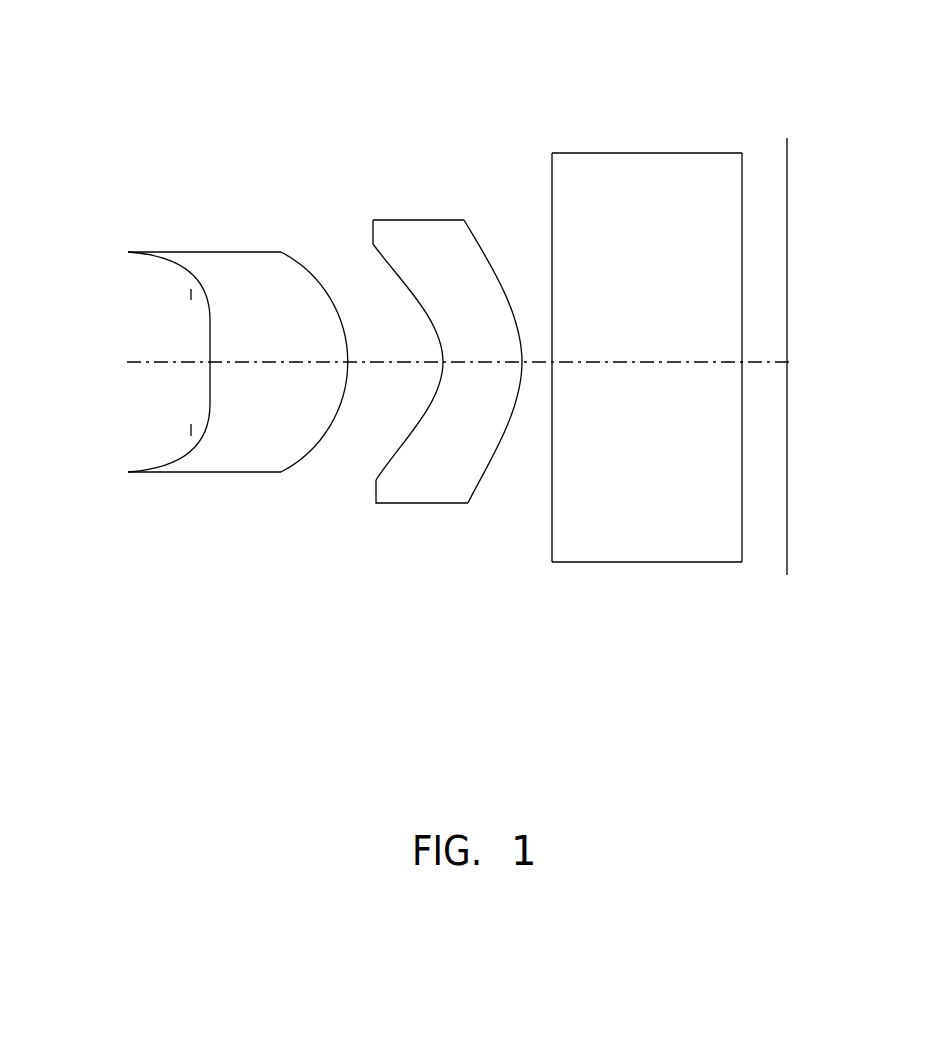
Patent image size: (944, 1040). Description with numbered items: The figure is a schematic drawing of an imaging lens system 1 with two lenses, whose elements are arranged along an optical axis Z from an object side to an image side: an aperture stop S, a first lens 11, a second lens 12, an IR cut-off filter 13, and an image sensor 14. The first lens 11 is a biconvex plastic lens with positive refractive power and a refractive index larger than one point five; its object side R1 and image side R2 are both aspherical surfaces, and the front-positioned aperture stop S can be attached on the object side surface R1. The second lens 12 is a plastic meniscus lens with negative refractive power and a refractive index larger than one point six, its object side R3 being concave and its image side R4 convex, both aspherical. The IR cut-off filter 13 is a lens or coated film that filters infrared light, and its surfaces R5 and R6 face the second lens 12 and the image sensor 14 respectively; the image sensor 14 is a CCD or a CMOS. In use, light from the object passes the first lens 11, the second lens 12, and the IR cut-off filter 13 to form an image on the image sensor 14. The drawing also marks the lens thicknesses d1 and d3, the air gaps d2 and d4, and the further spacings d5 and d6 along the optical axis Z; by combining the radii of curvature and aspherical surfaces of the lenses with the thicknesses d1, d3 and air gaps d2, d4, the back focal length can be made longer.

The imaging lens system 1 is at (200, 85).
The first lens 11 is at (238, 371).
The second lens 12 is at (427, 379).
The IR cut-off filter 13 is at (643, 368).
The image sensor 14 is at (787, 180).
The object side surface of the first lens R1 is at (210, 320).
The image side surface of the first lens R2 is at (297, 259).
The object side surface of the second lens R3 is at (384, 262).
The image side surface of the second lens R4 is at (477, 245).
The object-side surface of third lens R5 is at (552, 186).
The image-side surface of third lens R6 is at (742, 172).
The lens thickness of the first lens d1 is at (273, 360).
The air gap between the first and second lenses d2 is at (388, 360).
The lens thickness of the second lens d3 is at (472, 360).
The air gap between the second lens and the IR cut-off filter d4 is at (533, 360).
The thickness of third lens d5 is at (650, 360).
The distance between third lens and image plane d6 is at (757, 360).
The aperture stop S is at (190, 431).
The optical axis Z is at (449, 364).